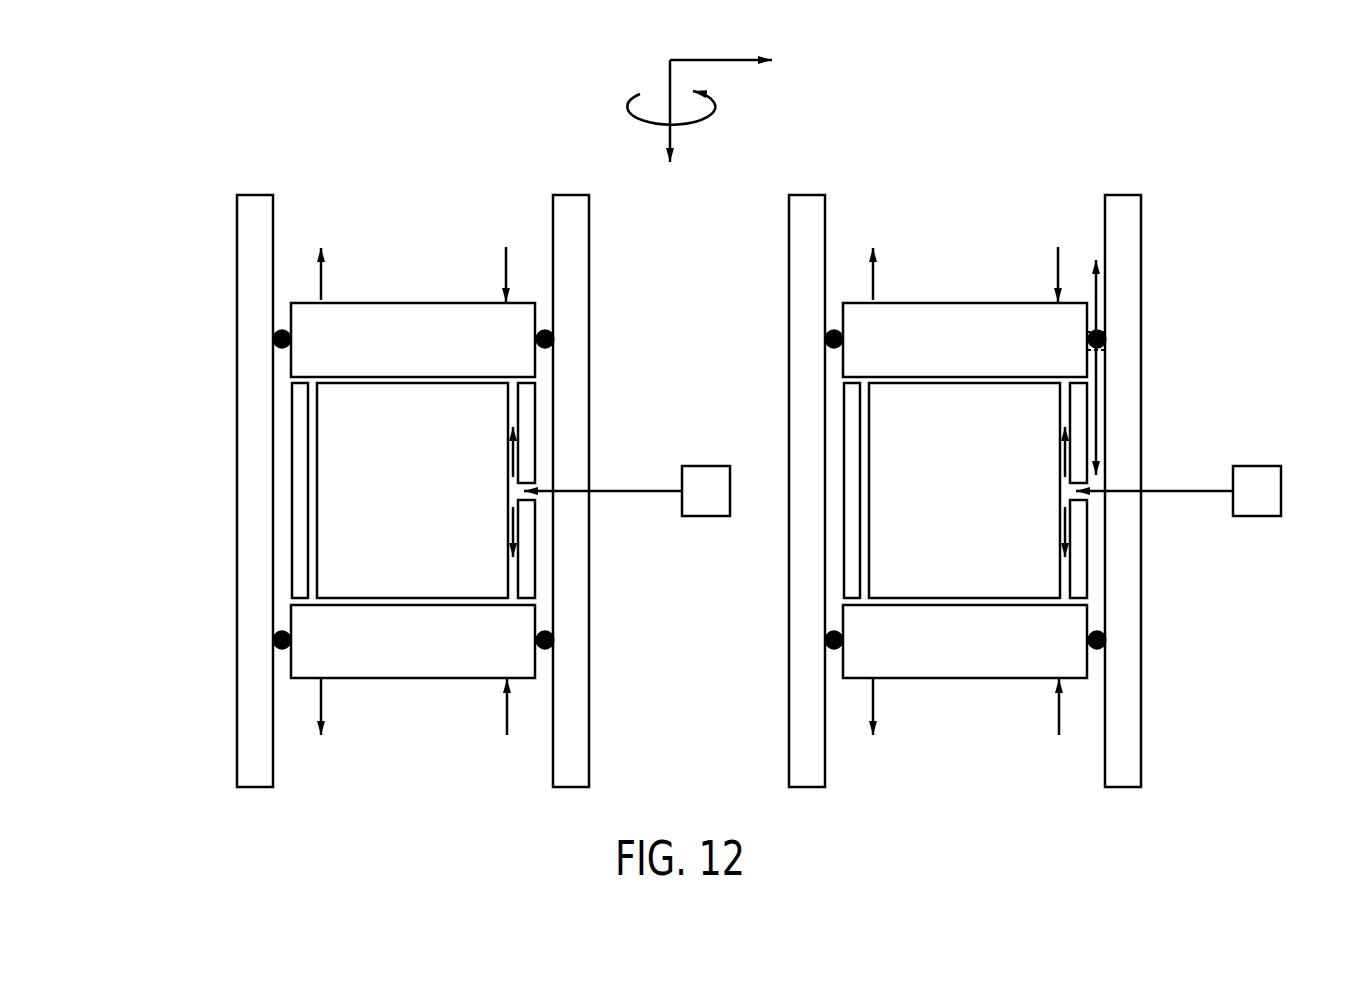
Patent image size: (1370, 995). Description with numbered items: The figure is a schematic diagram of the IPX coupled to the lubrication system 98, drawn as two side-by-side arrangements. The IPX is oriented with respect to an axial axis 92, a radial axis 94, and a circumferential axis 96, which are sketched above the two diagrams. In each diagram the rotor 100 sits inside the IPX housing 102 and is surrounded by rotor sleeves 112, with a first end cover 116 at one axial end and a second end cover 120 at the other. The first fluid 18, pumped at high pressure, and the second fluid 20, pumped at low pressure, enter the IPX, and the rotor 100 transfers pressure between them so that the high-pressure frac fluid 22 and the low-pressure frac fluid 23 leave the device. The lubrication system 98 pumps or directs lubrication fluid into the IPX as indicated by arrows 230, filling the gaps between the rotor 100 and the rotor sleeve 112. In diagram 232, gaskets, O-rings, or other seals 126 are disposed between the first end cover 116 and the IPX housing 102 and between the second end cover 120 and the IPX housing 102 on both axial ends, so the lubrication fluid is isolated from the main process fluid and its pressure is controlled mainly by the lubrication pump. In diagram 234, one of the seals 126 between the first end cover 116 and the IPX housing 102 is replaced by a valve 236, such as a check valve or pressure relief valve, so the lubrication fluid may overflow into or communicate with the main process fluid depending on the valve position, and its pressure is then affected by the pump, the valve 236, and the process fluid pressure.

The first fluid 18 is at (504, 268).
The second fluid 20 is at (505, 712).
The high-pressure frac fluid 22 is at (323, 700).
The low-pressure frac fluid 23 is at (323, 281).
The axial axis 92 is at (670, 80).
The radial axis 94 is at (715, 58).
The circumferential axis 96 is at (693, 120).
The lubrication system 98 is at (706, 466).
The rotor 100 is at (430, 453).
The IPX housing 102 is at (252, 240).
The rotor sleeves 112 is at (299, 460).
The first end cover 116 is at (411, 303).
The second end cover 120 is at (411, 680).
The seals 126 is at (281, 330).
The arrows 230 is at (516, 528).
The diagram 232 is at (378, 167).
The diagram 234 is at (930, 167).
The valve 236 is at (1100, 341).